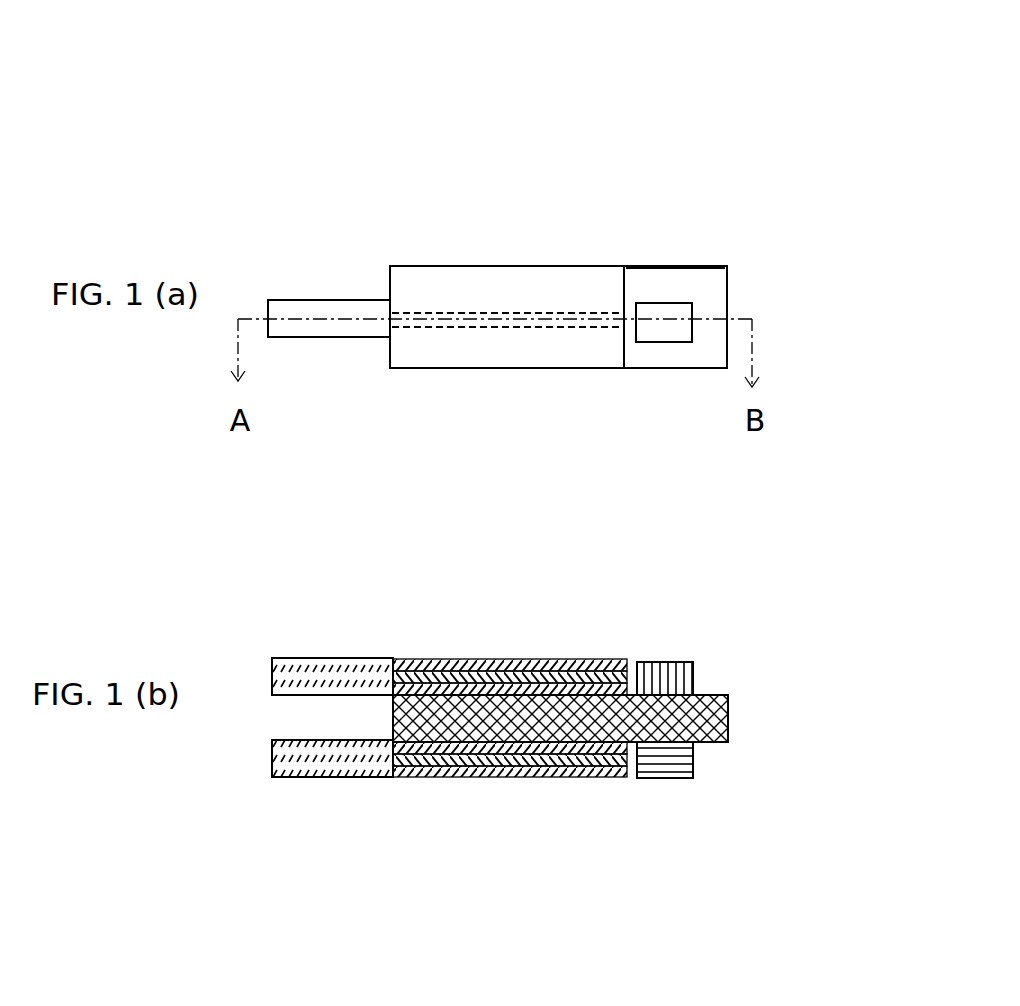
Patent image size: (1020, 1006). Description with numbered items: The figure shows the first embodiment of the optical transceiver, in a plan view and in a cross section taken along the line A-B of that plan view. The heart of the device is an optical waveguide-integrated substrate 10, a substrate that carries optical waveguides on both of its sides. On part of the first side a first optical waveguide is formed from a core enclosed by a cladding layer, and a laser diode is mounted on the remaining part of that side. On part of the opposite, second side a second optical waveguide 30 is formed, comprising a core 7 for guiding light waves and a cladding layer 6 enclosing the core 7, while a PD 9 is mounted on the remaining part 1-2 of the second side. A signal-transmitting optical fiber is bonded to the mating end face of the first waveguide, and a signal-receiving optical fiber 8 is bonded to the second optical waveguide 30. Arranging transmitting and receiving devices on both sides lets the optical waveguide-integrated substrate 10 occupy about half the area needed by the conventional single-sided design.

The remaining part of the second side 1-2 is at (705, 742).
The cladding layer 6 is at (423, 777).
The core 7 is at (517, 777).
The signal-receiving optical fiber 8 is at (288, 777).
The PD 9 is at (665, 780).
The optical waveguide-integrated substrate 10 is at (762, 98).
The second optical waveguide 30 is at (367, 885).